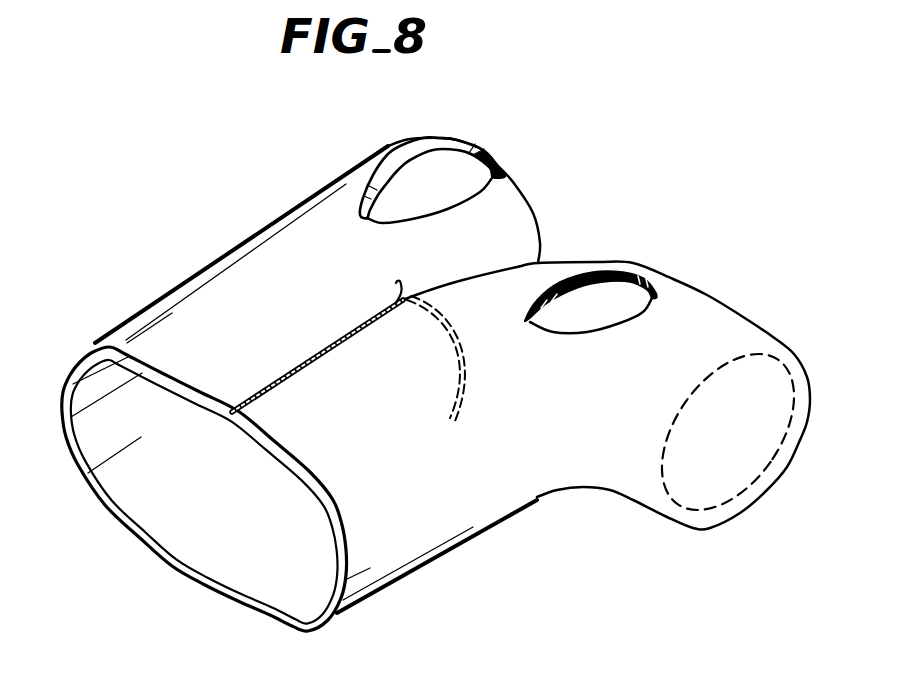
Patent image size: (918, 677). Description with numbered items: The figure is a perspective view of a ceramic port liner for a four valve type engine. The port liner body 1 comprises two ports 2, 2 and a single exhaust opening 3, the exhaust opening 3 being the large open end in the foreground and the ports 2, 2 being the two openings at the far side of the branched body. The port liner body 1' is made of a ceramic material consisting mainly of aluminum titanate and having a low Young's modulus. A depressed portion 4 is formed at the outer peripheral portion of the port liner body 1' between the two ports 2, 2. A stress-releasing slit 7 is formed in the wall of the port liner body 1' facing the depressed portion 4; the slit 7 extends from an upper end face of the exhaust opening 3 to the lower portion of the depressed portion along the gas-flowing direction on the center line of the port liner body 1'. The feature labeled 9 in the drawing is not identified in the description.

The port liner body 1 is at (241, 244).
The port liner body 1' is at (199, 489).
The ports 2 is at (533, 210).
The exhaust opening 3 is at (275, 572).
The depressed portion 4 is at (487, 268).
The stress-releasing slit 7 is at (231, 416).
The joining seam 9 is at (333, 350).